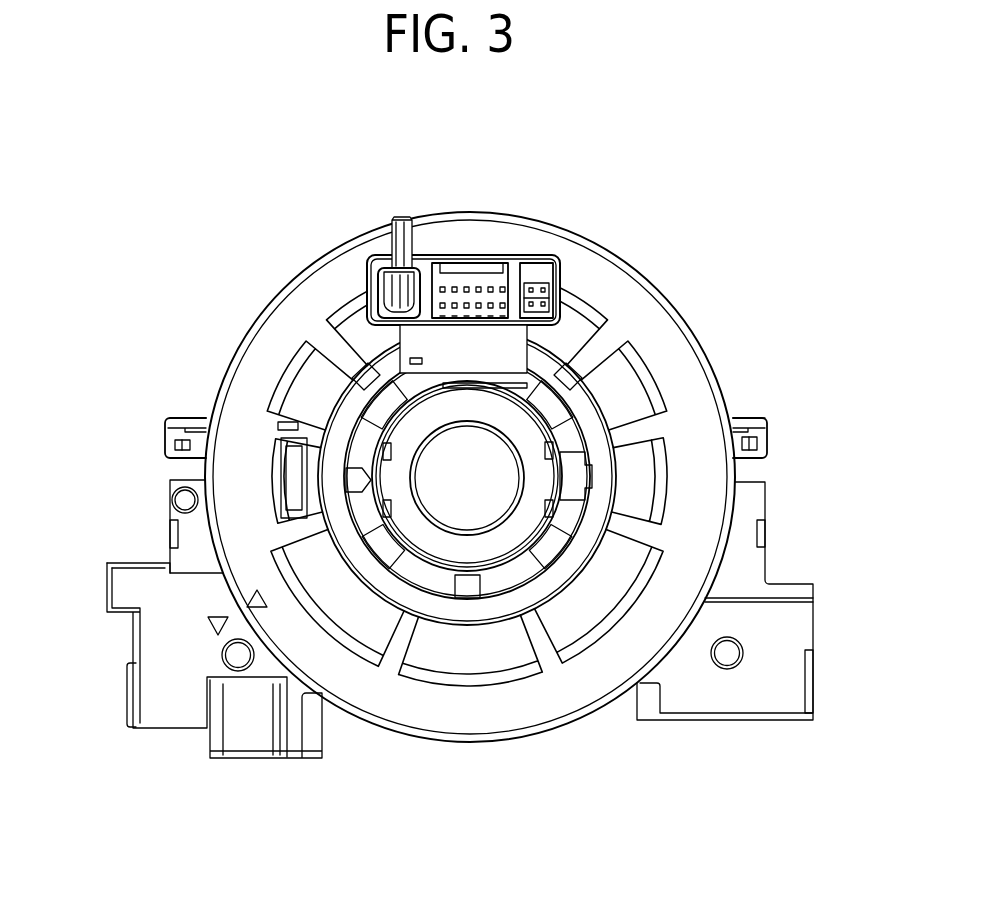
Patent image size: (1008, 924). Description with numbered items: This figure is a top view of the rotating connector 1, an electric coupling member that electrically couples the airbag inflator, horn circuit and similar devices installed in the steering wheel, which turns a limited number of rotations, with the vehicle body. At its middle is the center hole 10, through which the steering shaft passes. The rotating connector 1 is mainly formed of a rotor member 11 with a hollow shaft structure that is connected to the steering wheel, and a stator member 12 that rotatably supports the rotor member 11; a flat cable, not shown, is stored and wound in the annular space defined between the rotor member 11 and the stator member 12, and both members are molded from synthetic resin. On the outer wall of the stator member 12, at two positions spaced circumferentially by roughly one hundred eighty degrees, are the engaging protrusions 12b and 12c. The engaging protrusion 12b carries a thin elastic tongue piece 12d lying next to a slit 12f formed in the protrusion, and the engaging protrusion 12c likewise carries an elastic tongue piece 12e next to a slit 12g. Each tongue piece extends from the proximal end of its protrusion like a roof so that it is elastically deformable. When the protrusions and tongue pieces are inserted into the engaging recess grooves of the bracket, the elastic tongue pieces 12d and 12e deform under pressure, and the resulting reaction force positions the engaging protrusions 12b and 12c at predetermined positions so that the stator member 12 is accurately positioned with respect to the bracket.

The rotating connector 1 is at (284, 240).
The center hole 10 is at (500, 457).
The rotor member 11 is at (587, 270).
The stator member 12 is at (745, 573).
The engaging protrusion 12b is at (768, 447).
The engaging protrusion 12c is at (165, 451).
The elastic tongue piece 12d is at (768, 420).
The elastic tongue piece 12e is at (178, 419).
The slit 12f is at (768, 428).
The slit 12g is at (165, 428).